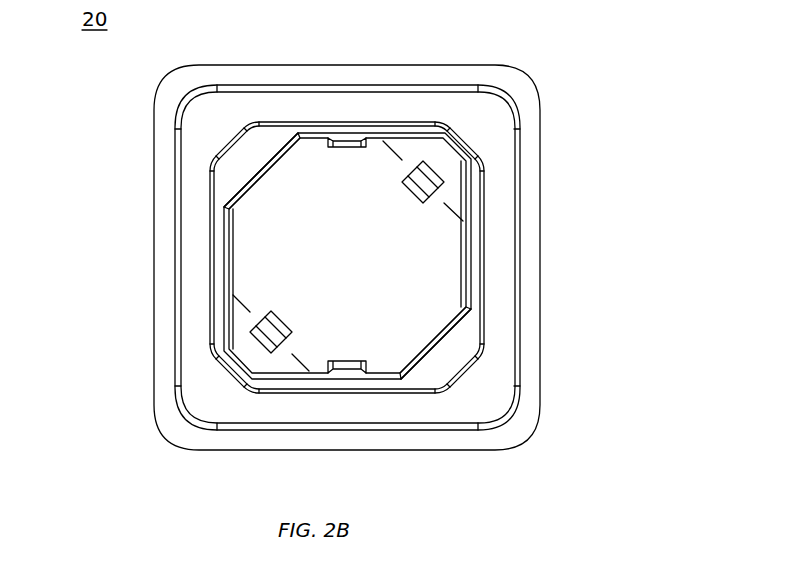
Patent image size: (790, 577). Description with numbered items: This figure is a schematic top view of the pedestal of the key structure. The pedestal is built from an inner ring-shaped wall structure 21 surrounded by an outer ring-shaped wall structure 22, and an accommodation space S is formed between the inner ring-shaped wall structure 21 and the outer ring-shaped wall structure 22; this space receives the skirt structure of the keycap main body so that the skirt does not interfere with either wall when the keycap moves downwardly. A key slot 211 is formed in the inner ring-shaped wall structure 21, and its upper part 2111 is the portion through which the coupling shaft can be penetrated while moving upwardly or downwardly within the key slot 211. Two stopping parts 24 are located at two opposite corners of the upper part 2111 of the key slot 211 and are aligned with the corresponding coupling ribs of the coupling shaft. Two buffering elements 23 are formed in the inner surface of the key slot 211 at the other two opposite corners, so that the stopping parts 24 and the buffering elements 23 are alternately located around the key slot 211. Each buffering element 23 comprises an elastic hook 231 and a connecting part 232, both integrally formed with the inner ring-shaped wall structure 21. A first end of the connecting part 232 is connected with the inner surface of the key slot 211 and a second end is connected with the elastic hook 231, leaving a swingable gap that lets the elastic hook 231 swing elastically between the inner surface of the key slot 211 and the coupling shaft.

The accommodation space S is at (282, 106).
The inner ring-shaped wall structure 21 is at (377, 278).
The outer ring-shaped wall structure 22 is at (163, 121).
The buffering element 23 is at (385, 237).
The elastic hook 231 is at (432, 168).
The connecting part 232 is at (452, 197).
The stopping part 24 is at (238, 176).
The key slot 211 is at (260, 252).
The upper part of the key slot 2111 is at (414, 256).